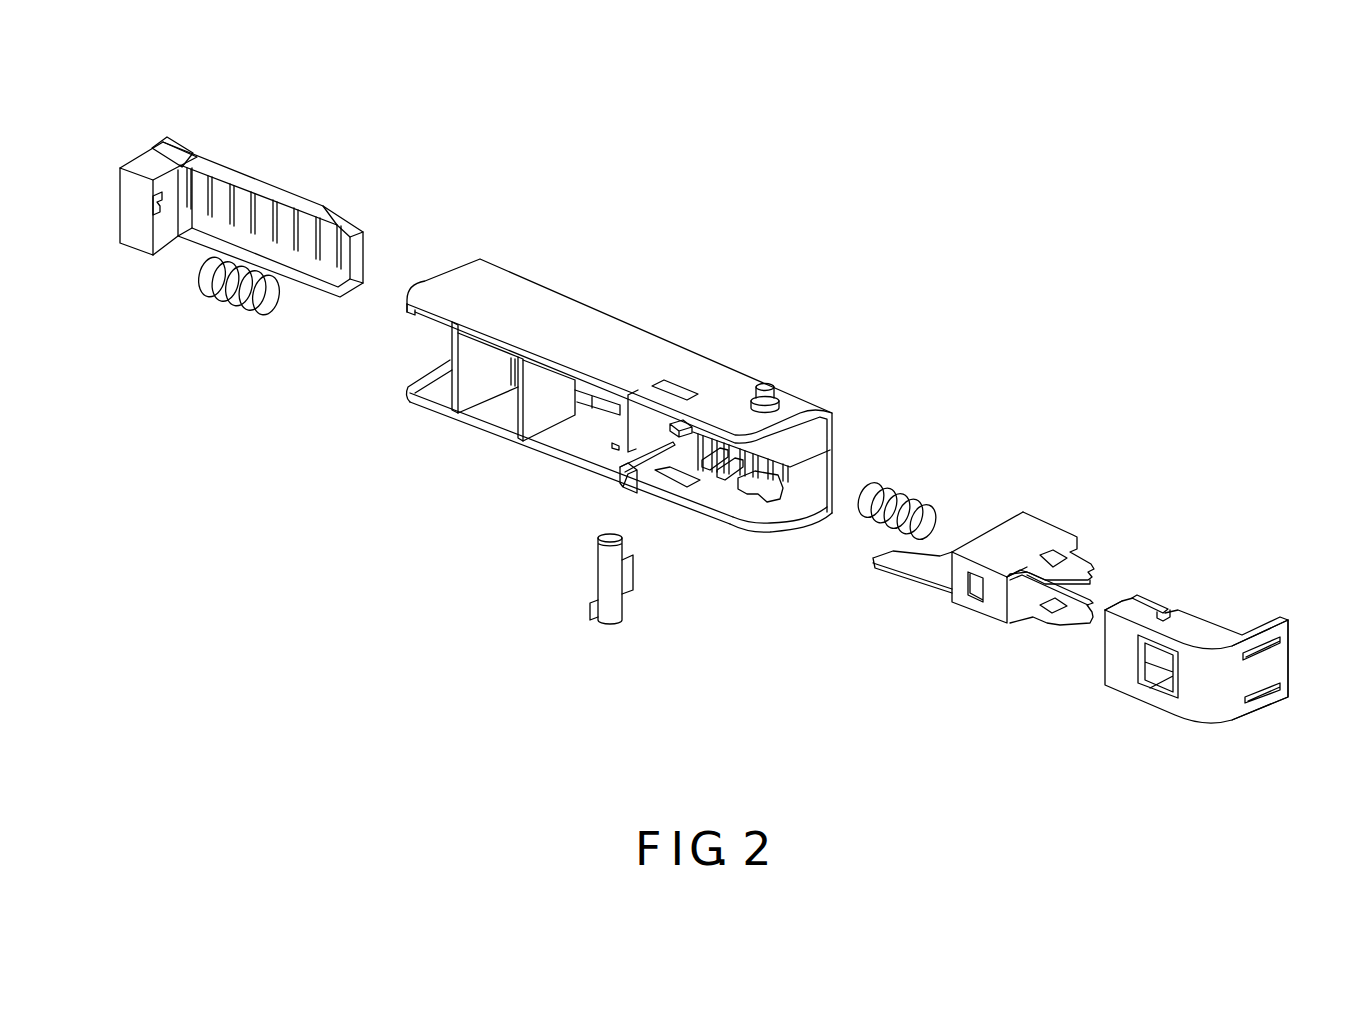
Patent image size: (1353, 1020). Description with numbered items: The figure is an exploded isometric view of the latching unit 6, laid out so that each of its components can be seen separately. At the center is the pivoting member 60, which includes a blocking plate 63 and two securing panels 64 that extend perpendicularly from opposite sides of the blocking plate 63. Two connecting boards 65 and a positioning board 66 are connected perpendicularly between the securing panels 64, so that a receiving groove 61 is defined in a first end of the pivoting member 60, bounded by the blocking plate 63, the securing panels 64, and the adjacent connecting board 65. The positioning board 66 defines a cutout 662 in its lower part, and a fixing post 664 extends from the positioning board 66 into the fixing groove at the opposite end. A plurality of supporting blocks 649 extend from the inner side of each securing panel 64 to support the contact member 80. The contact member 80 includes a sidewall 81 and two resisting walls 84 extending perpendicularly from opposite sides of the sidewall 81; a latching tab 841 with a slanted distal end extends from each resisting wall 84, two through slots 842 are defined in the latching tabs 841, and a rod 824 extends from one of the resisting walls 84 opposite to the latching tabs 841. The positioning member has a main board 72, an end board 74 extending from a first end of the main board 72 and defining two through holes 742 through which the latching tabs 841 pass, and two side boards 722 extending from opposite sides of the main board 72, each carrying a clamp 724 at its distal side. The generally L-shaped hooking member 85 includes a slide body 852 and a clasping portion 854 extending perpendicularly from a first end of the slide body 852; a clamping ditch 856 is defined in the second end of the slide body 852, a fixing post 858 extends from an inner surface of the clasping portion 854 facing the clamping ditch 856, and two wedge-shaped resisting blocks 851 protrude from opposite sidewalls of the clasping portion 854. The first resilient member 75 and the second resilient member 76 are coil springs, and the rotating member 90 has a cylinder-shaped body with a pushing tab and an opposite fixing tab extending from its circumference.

The latching unit 6 is at (1054, 342).
The pivoting member 60 is at (549, 268).
The receiving groove 61 is at (423, 348).
The blocking plate 63 is at (838, 448).
The securing panels 64 is at (583, 437).
The connecting boards 65 is at (472, 380).
The positioning board 66 is at (650, 422).
The cutout 662 is at (620, 467).
The fixing post 664 is at (685, 437).
The supporting blocks 649 is at (730, 470).
The main board 72 is at (1118, 657).
The side boards 722 is at (1127, 613).
The clamp 724 is at (1160, 600).
The end board 74 is at (1277, 667).
The through holes 742 is at (1263, 703).
The first resilient member 75 is at (243, 310).
The second resilient member 76 is at (900, 492).
The contact member 80 is at (1060, 495).
The sidewall 81 is at (992, 607).
The rod 824 is at (925, 573).
The resisting walls 84 is at (1008, 552).
The latching tab 841 is at (1078, 617).
The through slots 842 is at (1057, 557).
The hooking member 85 is at (232, 151).
The resisting blocks 851 is at (178, 155).
The slide body 852 is at (272, 188).
The clasping portion 854 is at (140, 165).
The clamping ditch 856 is at (338, 262).
The fixing post 858 is at (168, 204).
The rotating member 90 is at (610, 585).